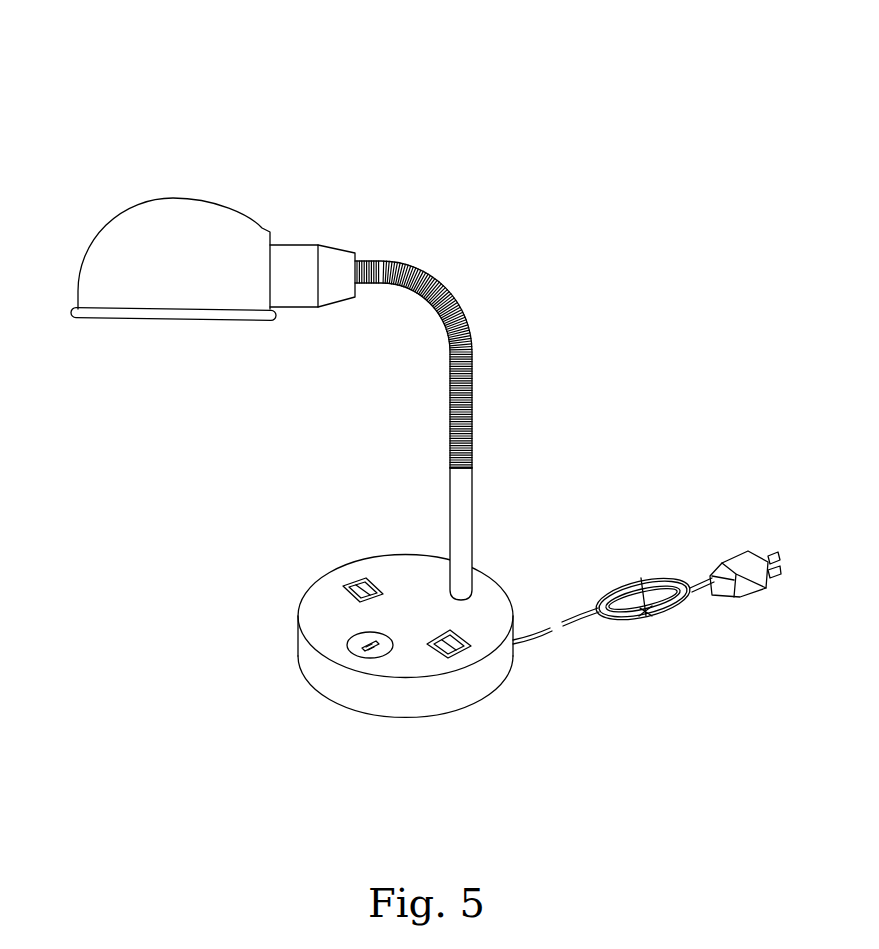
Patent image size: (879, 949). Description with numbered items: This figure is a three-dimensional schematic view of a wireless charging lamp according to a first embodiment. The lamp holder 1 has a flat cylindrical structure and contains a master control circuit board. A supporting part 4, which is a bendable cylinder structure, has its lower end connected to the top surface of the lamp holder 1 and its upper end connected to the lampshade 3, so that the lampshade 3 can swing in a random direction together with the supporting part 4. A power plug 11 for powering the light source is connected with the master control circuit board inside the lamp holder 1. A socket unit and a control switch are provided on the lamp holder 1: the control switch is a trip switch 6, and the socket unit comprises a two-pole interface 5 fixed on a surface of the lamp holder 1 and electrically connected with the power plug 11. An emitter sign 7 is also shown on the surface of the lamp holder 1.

The lamp holder 1 is at (383, 693).
The lampshade 3 is at (202, 250).
The supporting part 4 is at (472, 337).
The two-pole interface 5 is at (350, 587).
The trip switch 6 is at (468, 648).
The emitter sign 7 is at (347, 655).
The power plug 11 is at (661, 590).